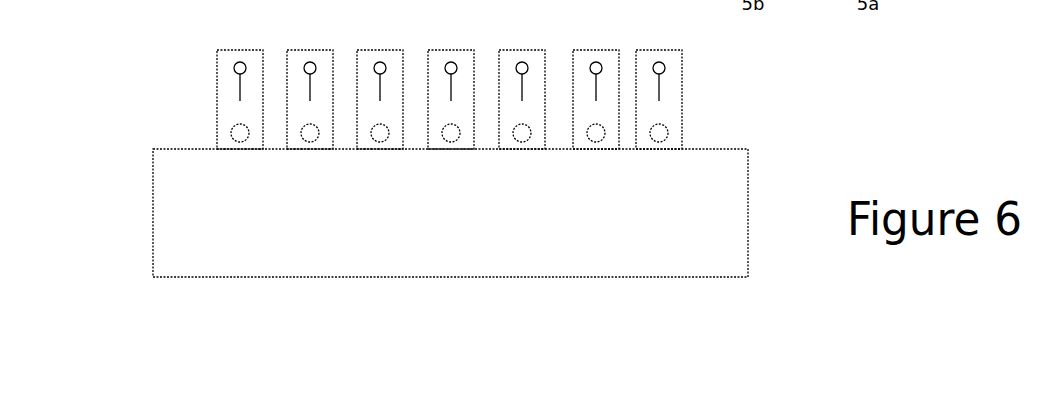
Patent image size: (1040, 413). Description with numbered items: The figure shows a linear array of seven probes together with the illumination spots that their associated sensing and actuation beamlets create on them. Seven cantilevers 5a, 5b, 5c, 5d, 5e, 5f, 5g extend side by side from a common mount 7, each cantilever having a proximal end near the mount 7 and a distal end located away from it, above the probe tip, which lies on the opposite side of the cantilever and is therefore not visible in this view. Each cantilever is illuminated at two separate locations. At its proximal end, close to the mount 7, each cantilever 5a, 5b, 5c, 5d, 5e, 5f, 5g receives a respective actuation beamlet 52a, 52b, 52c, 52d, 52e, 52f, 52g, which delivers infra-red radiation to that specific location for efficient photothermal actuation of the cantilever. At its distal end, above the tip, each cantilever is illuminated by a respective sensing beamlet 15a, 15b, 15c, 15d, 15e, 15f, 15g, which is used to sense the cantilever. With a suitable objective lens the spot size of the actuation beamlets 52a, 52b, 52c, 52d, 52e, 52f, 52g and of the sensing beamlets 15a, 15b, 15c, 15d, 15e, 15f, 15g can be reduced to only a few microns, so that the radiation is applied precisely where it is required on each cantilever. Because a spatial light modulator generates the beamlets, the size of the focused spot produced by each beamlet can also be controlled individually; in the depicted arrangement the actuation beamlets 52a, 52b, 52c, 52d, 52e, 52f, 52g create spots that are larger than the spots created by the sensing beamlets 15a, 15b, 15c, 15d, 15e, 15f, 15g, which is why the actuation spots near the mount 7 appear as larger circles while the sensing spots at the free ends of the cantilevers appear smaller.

The mount 7 is at (733, 202).
The cantilever 5a is at (239, 55).
The cantilever 5b is at (309, 55).
The cantilever 5c is at (379, 55).
The cantilever 5d is at (450, 55).
The cantilever 5e is at (521, 55).
The cantilever 5f is at (595, 55).
The cantilever 5g is at (659, 55).
The sensing beamlet 15a is at (240, 93).
The sensing beamlet 15b is at (310, 93).
The sensing beamlet 15c is at (380, 93).
The sensing beamlet 15d is at (451, 93).
The sensing beamlet 15e is at (522, 93).
The sensing beamlet 15f is at (596, 93).
The sensing beamlet 15g is at (659, 93).
The actuation beamlet 52a is at (240, 142).
The actuation beamlet 52b is at (310, 142).
The actuation beamlet 52c is at (380, 142).
The actuation beamlet 52d is at (451, 142).
The actuation beamlet 52e is at (522, 142).
The actuation beamlet 52f is at (596, 142).
The actuation beamlet 52g is at (659, 142).